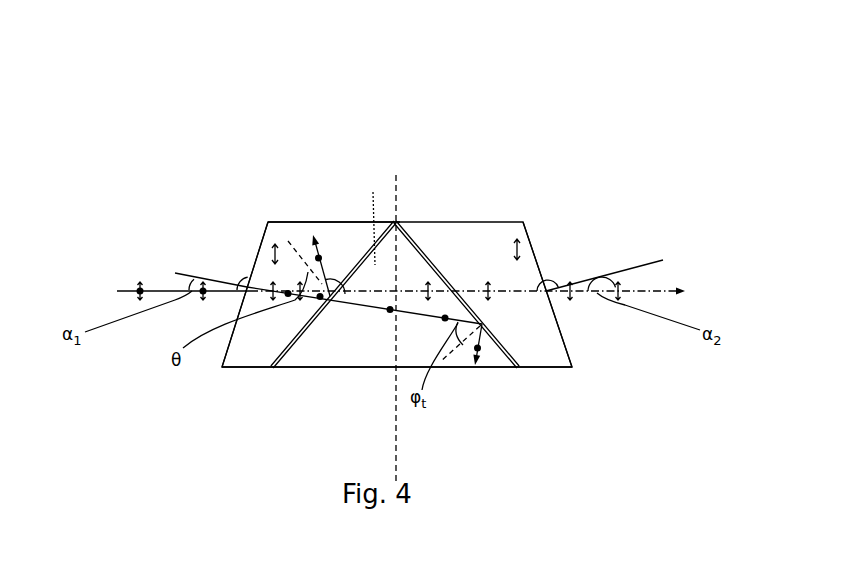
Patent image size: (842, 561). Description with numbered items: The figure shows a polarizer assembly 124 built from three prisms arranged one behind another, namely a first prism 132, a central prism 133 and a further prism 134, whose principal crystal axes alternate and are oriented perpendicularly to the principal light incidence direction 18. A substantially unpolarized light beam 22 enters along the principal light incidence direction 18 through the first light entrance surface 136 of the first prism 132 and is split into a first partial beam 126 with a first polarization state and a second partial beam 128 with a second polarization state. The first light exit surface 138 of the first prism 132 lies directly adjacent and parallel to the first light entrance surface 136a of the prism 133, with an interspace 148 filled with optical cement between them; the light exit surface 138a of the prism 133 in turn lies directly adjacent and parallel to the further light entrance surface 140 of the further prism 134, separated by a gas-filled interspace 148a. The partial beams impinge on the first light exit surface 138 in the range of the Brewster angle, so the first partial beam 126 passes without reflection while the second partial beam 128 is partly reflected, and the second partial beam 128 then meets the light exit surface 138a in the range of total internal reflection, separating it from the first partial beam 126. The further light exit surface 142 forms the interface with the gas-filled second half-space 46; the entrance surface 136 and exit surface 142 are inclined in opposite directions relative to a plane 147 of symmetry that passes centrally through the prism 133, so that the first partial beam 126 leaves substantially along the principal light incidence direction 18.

The light beam 22 is at (116, 289).
The principal light incidence direction 18 is at (652, 286).
The second half-space 46 is at (690, 221).
The polarizer assembly 124 is at (381, 128).
The first partial beam 126 is at (578, 278).
The second partial beam 128 is at (483, 352).
The first prism 132 is at (268, 222).
The prism 133 is at (335, 358).
The further prism 134 is at (478, 227).
The first light entrance surface 136 is at (262, 242).
The first light entrance surface of the prism 136a is at (365, 219).
The first light exit surface 138 is at (362, 246).
The light exit surface 138a is at (481, 340).
The further light entrance surface 140 is at (524, 346).
The further light exit surface 142 is at (578, 350).
The plane 147 is at (398, 194).
The interspace 148 is at (272, 355).
The interspace 148a is at (428, 248).